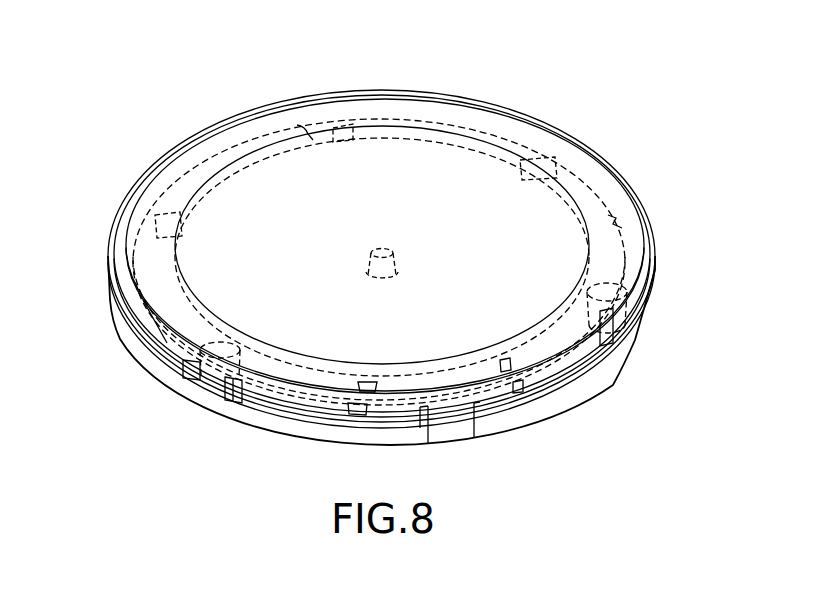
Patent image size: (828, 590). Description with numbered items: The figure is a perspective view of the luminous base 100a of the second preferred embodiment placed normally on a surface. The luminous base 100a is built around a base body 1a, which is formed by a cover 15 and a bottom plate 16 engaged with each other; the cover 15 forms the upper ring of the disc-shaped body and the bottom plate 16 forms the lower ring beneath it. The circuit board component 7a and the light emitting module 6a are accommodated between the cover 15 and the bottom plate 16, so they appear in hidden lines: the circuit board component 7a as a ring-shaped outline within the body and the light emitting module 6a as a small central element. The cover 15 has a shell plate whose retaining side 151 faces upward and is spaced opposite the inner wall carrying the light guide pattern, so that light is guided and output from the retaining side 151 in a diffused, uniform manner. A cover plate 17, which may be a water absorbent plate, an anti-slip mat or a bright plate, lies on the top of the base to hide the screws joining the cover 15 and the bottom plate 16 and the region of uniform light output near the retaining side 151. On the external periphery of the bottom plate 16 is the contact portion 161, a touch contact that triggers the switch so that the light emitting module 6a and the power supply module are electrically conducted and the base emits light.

The luminous base 100a is at (410, 20).
The cover plate 17 is at (225, 142).
The light emitting module 6a is at (382, 249).
The retaining side 151 is at (447, 143).
The circuit board component 7a is at (591, 183).
The cover 15 is at (642, 302).
The bottom plate 16 is at (620, 355).
The base body 1a is at (439, 267).
The contact portion 161 is at (452, 437).